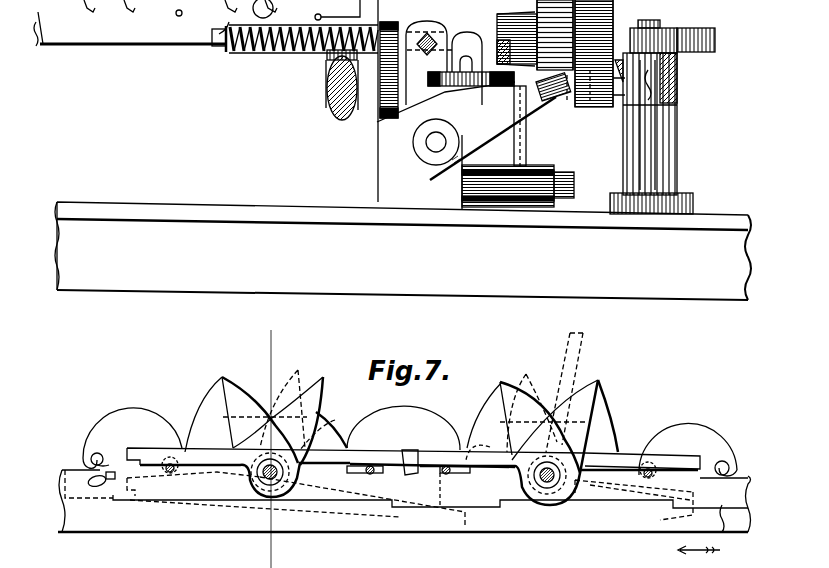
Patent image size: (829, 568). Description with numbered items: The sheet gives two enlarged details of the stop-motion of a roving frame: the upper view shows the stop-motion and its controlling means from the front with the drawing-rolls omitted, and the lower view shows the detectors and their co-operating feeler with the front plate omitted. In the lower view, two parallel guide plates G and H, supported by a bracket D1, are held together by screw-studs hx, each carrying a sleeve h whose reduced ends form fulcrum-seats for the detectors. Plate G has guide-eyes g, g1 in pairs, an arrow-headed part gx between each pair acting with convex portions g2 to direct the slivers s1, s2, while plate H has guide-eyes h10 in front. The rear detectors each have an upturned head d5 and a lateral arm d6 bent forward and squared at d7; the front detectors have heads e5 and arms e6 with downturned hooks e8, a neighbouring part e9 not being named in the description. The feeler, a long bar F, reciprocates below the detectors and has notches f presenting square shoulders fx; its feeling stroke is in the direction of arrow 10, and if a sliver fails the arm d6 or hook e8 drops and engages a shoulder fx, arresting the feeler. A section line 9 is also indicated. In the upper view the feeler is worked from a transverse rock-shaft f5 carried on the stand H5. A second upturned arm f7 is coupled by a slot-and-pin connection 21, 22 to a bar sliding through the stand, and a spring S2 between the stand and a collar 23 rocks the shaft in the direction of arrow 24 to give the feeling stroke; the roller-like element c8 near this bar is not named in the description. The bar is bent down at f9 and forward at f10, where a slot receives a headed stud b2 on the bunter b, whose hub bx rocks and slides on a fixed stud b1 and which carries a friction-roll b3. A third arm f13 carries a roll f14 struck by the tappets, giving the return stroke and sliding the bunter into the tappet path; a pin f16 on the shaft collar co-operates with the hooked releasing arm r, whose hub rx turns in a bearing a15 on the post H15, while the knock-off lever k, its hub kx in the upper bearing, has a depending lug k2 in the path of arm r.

In FIG. 6, the guide plate H is at (100, 38).
In FIG. 6, the feeler F is at (38, 47).
In FIG. 7, the feeler F is at (172, 525).
In FIG. 6, the sleeve h is at (322, 15).
In FIG. 7, the sleeve h is at (265, 490).
In FIG. 6, the screw-stud hx is at (178, 16).
In FIG. 7, the screw-stud hx is at (262, 482).
In FIG. 6, the guide-eye h10 is at (228, 22).
In FIG. 6, the collar 23 is at (227, 52).
In FIG. 6, the spring S2 is at (278, 55).
In FIG. 6, the roller c8 is at (328, 86).
In FIG. 6, the bracket D1 is at (324, 108).
In FIG. 6, the notch f is at (389, 26).
In FIG. 7, the notch f is at (93, 503).
In FIG. 6, the slot 21 is at (430, 30).
In FIG. 6, the pin 22 is at (427, 55).
In FIG. 6, the bent-down portion of bar f9 is at (456, 40).
In FIG. 6, the friction-roll b3 is at (492, 54).
In FIG. 6, the depending lug k2 is at (600, 108).
In FIG. 6, the bunter b is at (527, 128).
In FIG. 6, the roll f14 is at (535, 96).
In FIG. 6, the arrow 24 is at (455, 162).
In FIG. 6, the feeler rock-shaft f5 is at (413, 142).
In FIG. 6, the detector-releasing arm r is at (459, 127).
In FIG. 6, the second upturned arm f7 is at (372, 120).
In FIG. 6, the pin f16 is at (378, 122).
In FIG. 6, the stand H5 is at (378, 183).
In FIG. 6, the headed stud b2 is at (500, 160).
In FIG. 6, the fixed stud b1 is at (575, 184).
In FIG. 6, the forward-bent portion of bar f10 is at (527, 148).
In FIG. 6, the third arm f13 is at (470, 170).
In FIG. 6, the hub of bunter bx is at (502, 210).
In FIG. 6, the post H15 is at (677, 170).
In FIG. 6, the knock-off lever k is at (716, 42).
In FIG. 6, the hub of knock-off lever kx is at (668, 30).
In FIG. 6, the hub of detector-releasing device rx is at (678, 78).
In FIG. 6, the upright bearing a15 is at (680, 96).
In FIG. 7, the guide plate G is at (750, 488).
In FIG. 7, the shoulder fx is at (110, 505).
In FIG. 7, the lug e9 is at (95, 479).
In FIG. 7, the detector head e5 is at (323, 378).
In FIG. 7, the detector head d5 is at (243, 363).
In FIG. 7, the section line 9 is at (264, 353).
In FIG. 7, the lateral arm d6 is at (372, 447).
In FIG. 7, the downturned hook e8 is at (414, 476).
In FIG. 7, the lateral arm e6 is at (466, 447).
In FIG. 7, the sliver s2 is at (363, 500).
In FIG. 7, the sliver s1 is at (450, 498).
In FIG. 7, the guide-eye g is at (688, 443).
In FIG. 7, the guide-eye g1 is at (737, 470).
In FIG. 7, the convex portion g2 is at (602, 438).
In FIG. 7, the arrow-headed part gx is at (690, 430).
In FIG. 7, the forward-bent end d7 is at (700, 455).
In FIG. 7, the arrow 10 is at (699, 557).